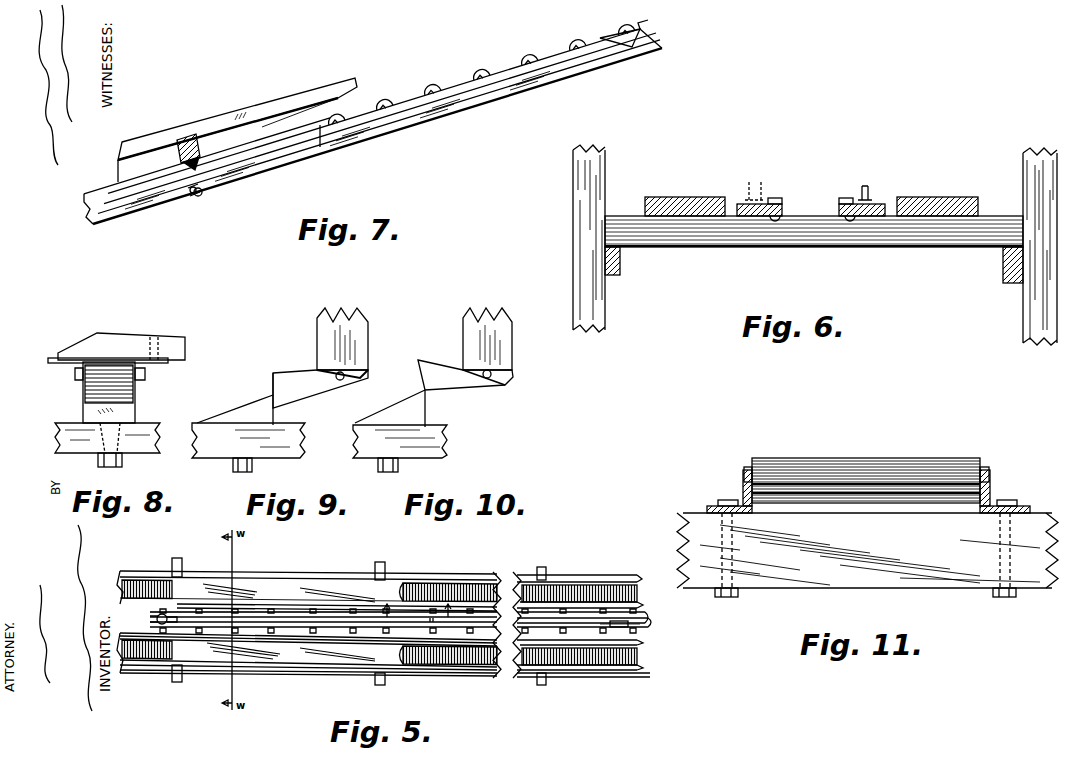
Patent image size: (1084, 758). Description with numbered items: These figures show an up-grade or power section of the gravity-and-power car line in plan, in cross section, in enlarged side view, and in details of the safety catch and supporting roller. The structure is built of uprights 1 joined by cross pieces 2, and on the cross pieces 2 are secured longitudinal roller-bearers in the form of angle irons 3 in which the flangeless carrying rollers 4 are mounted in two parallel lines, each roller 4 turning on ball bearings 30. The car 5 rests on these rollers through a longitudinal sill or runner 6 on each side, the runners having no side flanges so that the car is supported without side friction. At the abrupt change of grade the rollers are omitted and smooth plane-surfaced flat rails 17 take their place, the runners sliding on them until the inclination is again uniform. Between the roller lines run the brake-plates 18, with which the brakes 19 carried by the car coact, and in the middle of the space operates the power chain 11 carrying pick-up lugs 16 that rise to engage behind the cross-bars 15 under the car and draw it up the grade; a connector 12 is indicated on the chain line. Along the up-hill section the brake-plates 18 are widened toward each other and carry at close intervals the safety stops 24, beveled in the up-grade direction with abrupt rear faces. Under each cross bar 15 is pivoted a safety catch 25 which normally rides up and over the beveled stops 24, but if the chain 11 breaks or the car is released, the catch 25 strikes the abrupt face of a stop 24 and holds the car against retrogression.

In FIG. 6, the uprights 1 is at (575, 197).
In FIG. 6, the cross pieces 2 is at (750, 237).
In FIG. 5, the cross pieces 2 is at (177, 563).
In FIG. 11, the cross pieces 2 is at (867, 555).
In FIG. 7, the angle irons 3 is at (461, 90).
In FIG. 11, the angle irons 3 is at (743, 495).
In FIG. 7, the carrying rollers 4 is at (386, 104).
In FIG. 5, the carrying rollers 4 is at (140, 586).
In FIG. 11, the carrying rollers 4 is at (887, 470).
In FIG. 7, the car 5 is at (213, 113).
In FIG. 7, the longitudinal sill or runner 6 is at (252, 130).
In FIG. 5, the power chain 11 is at (156, 619).
In FIG. 5, the end connector 12 is at (630, 628).
In FIG. 7, the cross-bars 15 is at (180, 147).
In FIG. 8, the cross-bars 15 is at (120, 340).
In FIG. 9, the cross-bars 15 is at (362, 333).
In FIG. 10, the cross-bars 15 is at (503, 338).
In FIG. 5, the pick-up lugs 16 is at (310, 622).
In FIG. 7, the flat rails 17 is at (97, 193).
In FIG. 6, the flat rails 17 is at (673, 199).
In FIG. 5, the flat rails 17 is at (250, 590).
In FIG. 7, the brake-plates 18 is at (176, 195).
In FIG. 6, the brake-plates 18 is at (742, 218).
In FIG. 8, the brake-plates 18 is at (78, 433).
In FIG. 9, the brake-plates 18 is at (248, 447).
In FIG. 10, the brake-plates 18 is at (436, 445).
In FIG. 5, the brake-plates 18 is at (120, 600).
In FIG. 6, the brakes 19 is at (757, 195).
In FIG. 7, the safety stops 24 is at (200, 168).
In FIG. 6, the safety stops 24 is at (780, 200).
In FIG. 8, the safety stops 24 is at (128, 410).
In FIG. 9, the safety stops 24 is at (248, 408).
In FIG. 10, the safety stops 24 is at (425, 413).
In FIG. 5, the safety stops 24 is at (272, 610).
In FIG. 7, the safety catch 25 is at (180, 163).
In FIG. 8, the safety catch 25 is at (85, 385).
In FIG. 9, the safety catch 25 is at (290, 382).
In FIG. 10, the safety catch 25 is at (437, 363).
In FIG. 11, the ball bearings 30 is at (744, 471).